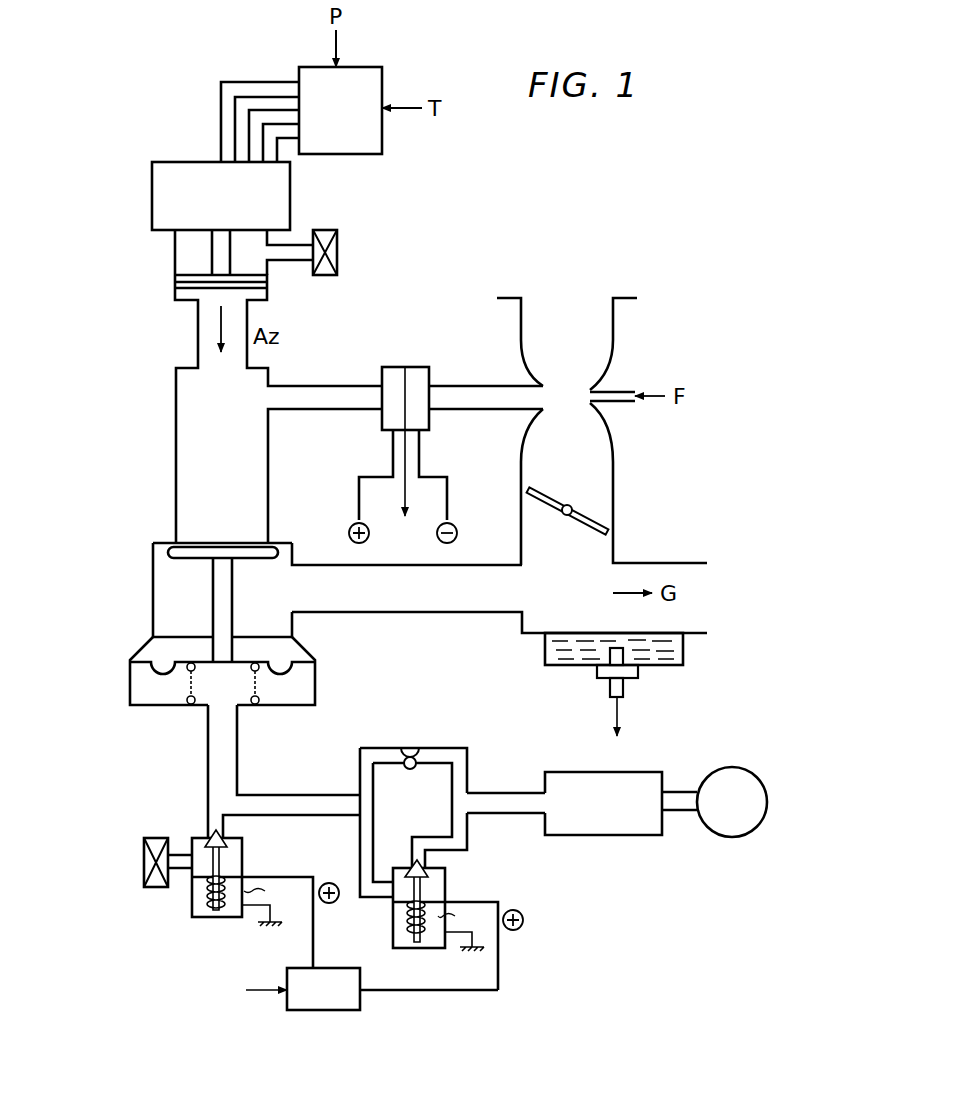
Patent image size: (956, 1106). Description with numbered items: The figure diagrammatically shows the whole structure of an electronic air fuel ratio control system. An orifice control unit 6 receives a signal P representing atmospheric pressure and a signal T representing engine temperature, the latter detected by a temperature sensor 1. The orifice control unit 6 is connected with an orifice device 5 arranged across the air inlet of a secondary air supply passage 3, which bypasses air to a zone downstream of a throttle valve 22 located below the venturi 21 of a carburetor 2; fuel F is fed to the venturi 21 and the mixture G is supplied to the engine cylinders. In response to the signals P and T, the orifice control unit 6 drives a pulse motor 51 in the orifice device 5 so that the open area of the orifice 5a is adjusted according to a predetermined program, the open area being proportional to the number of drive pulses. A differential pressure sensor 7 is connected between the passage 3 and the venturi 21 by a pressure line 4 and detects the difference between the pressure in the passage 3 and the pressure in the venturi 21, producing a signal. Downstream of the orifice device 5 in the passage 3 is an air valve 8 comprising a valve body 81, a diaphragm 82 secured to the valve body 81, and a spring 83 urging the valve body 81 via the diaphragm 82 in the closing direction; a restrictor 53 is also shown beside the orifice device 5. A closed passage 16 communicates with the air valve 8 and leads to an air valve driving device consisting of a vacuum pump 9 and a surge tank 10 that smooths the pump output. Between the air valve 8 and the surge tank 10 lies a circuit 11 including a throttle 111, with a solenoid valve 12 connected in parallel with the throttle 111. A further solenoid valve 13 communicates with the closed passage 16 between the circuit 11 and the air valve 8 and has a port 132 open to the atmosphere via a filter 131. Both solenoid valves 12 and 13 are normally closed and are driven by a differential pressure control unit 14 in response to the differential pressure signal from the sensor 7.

The temperature sensor 1 is at (608, 689).
The carburetor 2 is at (570, 312).
The venturi 21 is at (603, 328).
The throttle valve 22 is at (590, 517).
The secondary air supply passage 3 is at (185, 478).
The pressure line 4 is at (356, 390).
The orifice device 5 is at (269, 333).
The orifice 5a is at (197, 290).
The pulse motor 51 is at (183, 162).
The restrictor 53 is at (337, 254).
The orifice control unit 6 is at (382, 74).
The differential pressure sensor 7 is at (432, 376).
The air valve 8 is at (199, 648).
The valve body 81 is at (228, 590).
The diaphragm 82 is at (150, 652).
The spring 83 is at (188, 706).
The vacuum pump 9 is at (718, 826).
The surge tank 10 is at (604, 838).
The circuit 11 is at (430, 798).
The throttle 111 is at (416, 756).
The solenoid valve 12 is at (437, 887).
The solenoid valve 13 is at (211, 884).
The filter 131 is at (144, 864).
The port 132 is at (181, 855).
The differential pressure control unit 14 is at (338, 968).
The closed passage 16 is at (235, 746).